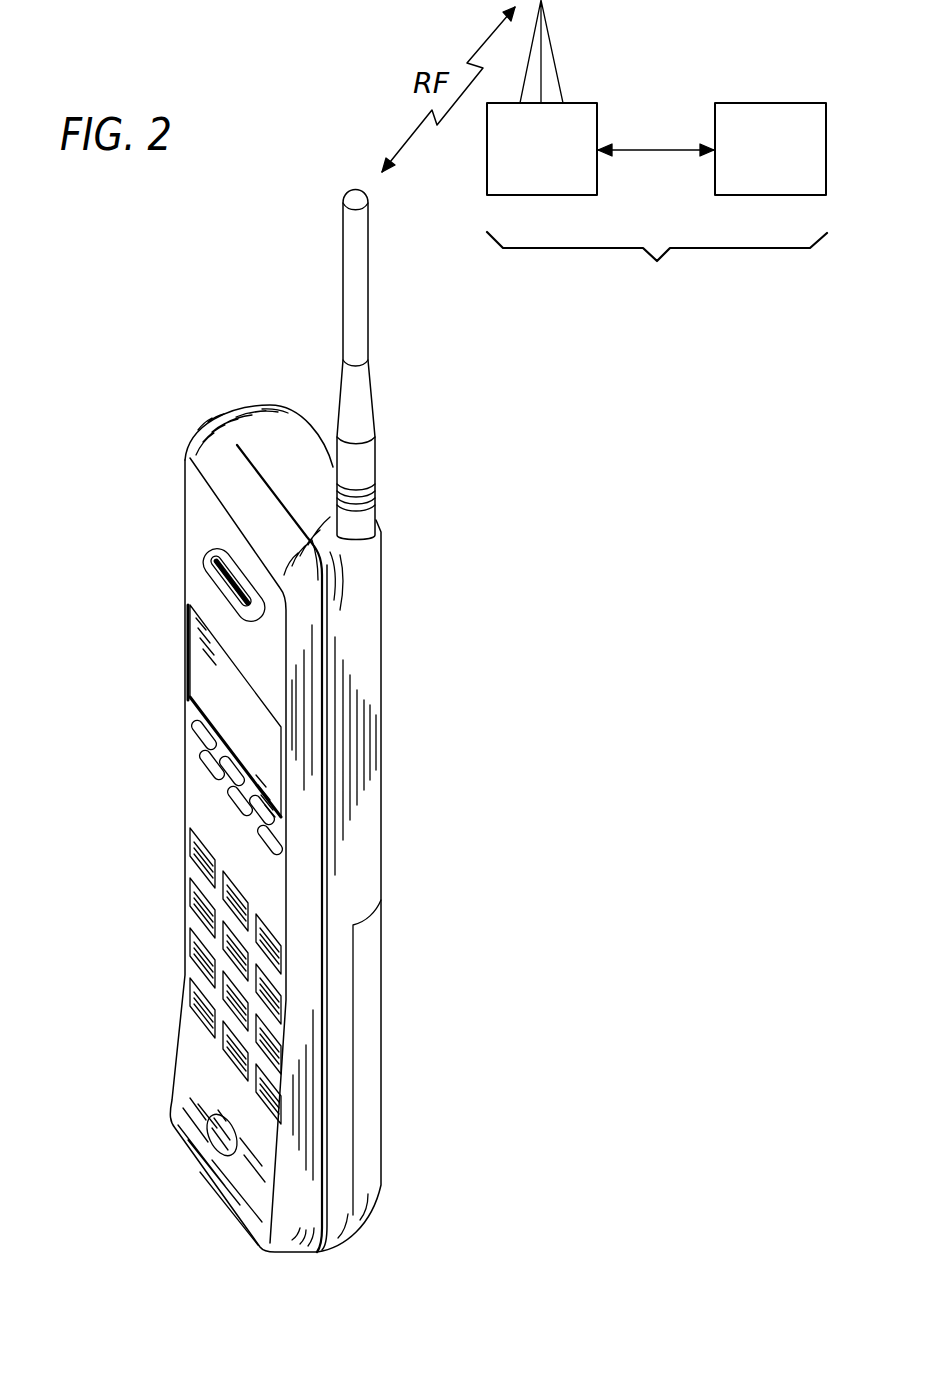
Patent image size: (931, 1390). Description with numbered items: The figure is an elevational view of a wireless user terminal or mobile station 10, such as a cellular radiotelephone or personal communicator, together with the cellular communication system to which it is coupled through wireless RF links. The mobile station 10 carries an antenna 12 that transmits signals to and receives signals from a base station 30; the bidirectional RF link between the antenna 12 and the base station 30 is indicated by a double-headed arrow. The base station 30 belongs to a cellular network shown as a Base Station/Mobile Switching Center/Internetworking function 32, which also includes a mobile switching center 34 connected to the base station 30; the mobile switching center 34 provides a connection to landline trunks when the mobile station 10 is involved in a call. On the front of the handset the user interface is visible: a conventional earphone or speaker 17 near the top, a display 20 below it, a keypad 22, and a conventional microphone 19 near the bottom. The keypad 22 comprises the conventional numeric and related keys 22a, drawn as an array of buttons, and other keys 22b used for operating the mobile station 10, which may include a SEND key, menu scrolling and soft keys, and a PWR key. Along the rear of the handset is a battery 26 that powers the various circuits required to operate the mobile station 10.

The mobile station 10 is at (112, 447).
The antenna 12 is at (356, 305).
The speaker 17 is at (228, 566).
The microphone 19 is at (215, 1138).
The display 20 is at (207, 682).
The keypad 22 is at (254, 921).
The numeric and related keys 22a is at (200, 955).
The other keys 22b is at (200, 790).
The battery 26 is at (366, 1090).
The base station 30 is at (540, 195).
The Base Station/Mobile Switching Center/Internetworking function (BMI) 32 is at (657, 227).
The mobile switching center (MSC) 34 is at (768, 103).